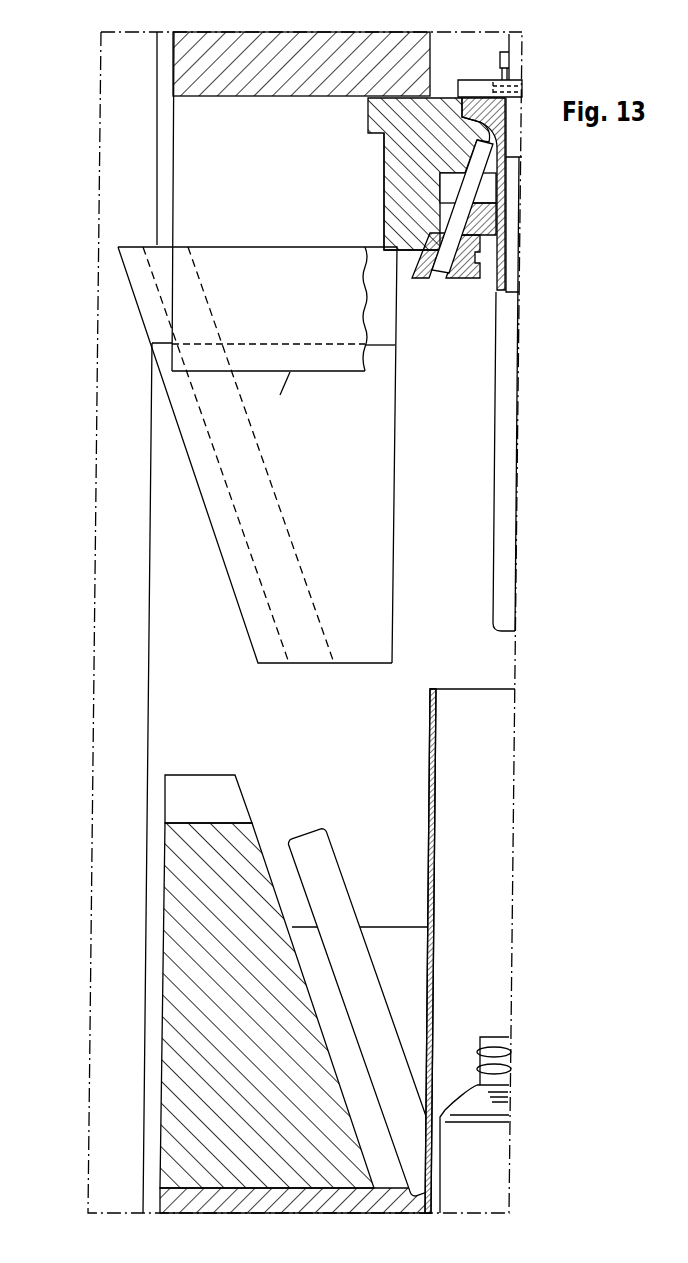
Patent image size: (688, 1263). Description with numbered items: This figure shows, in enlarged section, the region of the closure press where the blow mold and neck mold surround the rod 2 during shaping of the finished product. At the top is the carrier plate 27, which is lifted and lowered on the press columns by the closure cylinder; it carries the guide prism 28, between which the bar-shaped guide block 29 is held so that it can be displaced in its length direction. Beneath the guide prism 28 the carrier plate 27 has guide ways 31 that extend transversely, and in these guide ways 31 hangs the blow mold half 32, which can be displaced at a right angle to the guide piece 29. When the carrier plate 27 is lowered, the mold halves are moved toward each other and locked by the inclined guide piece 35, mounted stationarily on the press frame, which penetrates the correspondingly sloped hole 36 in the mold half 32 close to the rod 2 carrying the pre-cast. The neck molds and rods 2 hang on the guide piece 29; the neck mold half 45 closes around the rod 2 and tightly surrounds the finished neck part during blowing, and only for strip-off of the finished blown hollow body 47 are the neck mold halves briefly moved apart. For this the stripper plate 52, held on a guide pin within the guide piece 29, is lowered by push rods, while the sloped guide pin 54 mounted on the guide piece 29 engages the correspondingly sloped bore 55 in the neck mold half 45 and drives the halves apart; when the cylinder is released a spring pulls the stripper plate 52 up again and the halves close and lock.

The rod 2 is at (518, 357).
The carrier plate 27 is at (190, 66).
The guide prism 28 is at (383, 158).
The guide block 29 is at (385, 192).
The guide ways 31 is at (280, 396).
The mold half 32 is at (295, 445).
The inclined guide piece 35 is at (368, 1012).
The sloped hole 36 is at (237, 494).
The neck mold half 45 is at (480, 258).
The blown hollow body 47 is at (493, 1157).
The stripper plate 52 is at (478, 218).
The sloped guide pin 54 is at (470, 190).
The sloped bore 55 is at (437, 278).